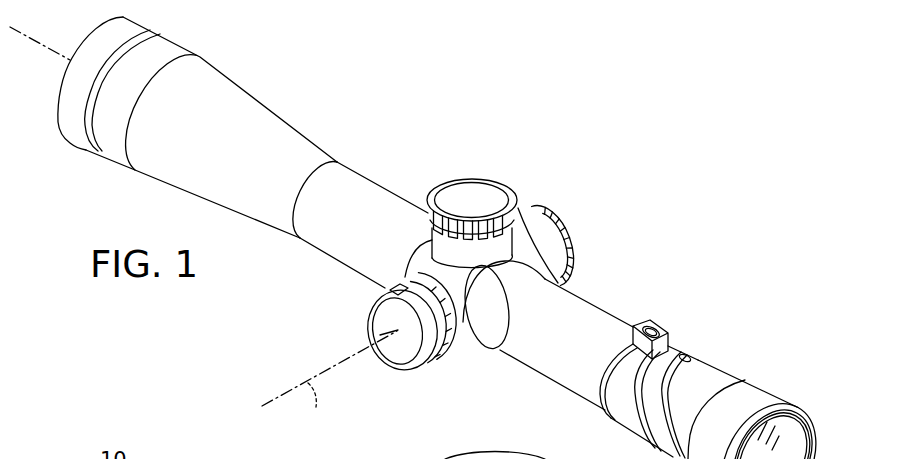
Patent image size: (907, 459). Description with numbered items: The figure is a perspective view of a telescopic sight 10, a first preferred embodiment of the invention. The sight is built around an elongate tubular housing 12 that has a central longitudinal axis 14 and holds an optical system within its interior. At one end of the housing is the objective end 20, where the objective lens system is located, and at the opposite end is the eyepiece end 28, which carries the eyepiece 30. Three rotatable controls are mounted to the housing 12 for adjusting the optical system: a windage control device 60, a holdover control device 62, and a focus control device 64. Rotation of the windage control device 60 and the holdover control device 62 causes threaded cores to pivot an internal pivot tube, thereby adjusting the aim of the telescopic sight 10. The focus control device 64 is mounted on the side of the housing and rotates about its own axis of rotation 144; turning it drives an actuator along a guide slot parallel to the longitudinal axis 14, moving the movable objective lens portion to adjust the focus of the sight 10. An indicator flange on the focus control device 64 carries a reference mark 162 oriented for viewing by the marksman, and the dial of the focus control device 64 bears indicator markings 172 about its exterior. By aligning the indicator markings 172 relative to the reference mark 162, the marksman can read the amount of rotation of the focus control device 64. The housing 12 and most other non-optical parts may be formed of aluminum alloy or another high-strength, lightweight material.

The telescopic sight 10 is at (637, 99).
The elongate tubular housing 12 is at (301, 143).
The central longitudinal axis 14 is at (855, 455).
The objective end 20 is at (59, 148).
The eyepiece end 28 is at (782, 378).
The eyepiece 30 is at (788, 434).
The windage control device 60 is at (568, 214).
The holdover control device 62 is at (473, 193).
The focus control device 64 is at (399, 351).
The axis of rotation 144 is at (317, 414).
The reference mark 162 is at (463, 313).
The indicator markings 172 is at (446, 311).